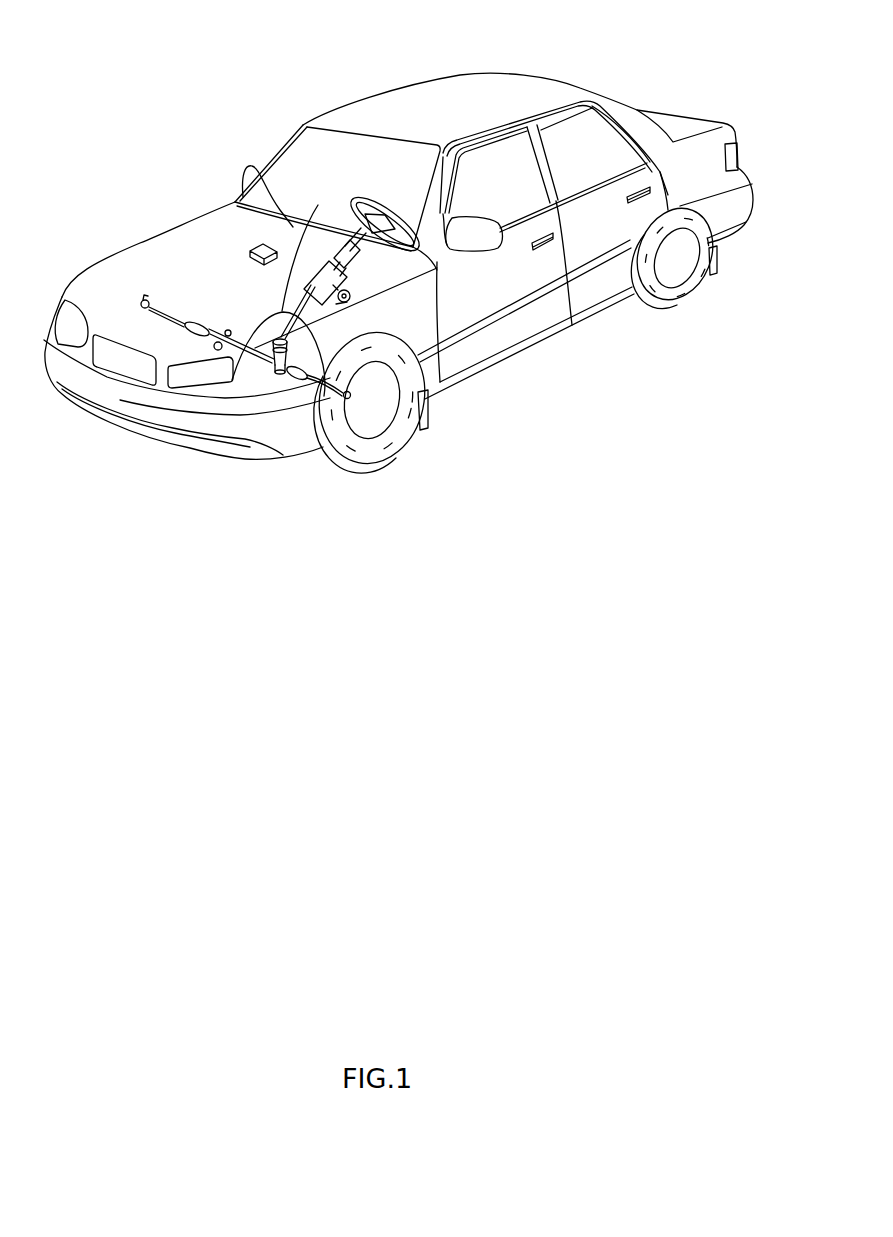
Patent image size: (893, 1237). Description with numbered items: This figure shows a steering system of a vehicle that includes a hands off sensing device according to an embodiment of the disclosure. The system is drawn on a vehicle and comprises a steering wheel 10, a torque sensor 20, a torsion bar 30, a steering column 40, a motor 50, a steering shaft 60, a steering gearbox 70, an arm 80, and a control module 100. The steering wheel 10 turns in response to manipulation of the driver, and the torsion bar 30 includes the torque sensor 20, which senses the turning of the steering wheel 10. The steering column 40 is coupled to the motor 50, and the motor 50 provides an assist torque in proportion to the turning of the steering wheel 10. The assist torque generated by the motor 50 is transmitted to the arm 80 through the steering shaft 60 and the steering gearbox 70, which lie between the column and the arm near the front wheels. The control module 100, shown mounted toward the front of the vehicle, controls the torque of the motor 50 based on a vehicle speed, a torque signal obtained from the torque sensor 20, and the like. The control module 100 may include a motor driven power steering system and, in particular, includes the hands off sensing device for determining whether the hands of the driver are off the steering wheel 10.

The steering wheel 10 is at (368, 200).
The torque sensor 20 is at (356, 229).
The torsion bar 30 is at (340, 234).
The steering column 40 is at (326, 262).
The motor 50 is at (248, 190).
The steering shaft 60 is at (222, 336).
The steering gearbox 70 is at (274, 372).
The arm 80 is at (173, 313).
The control module 100 is at (255, 244).